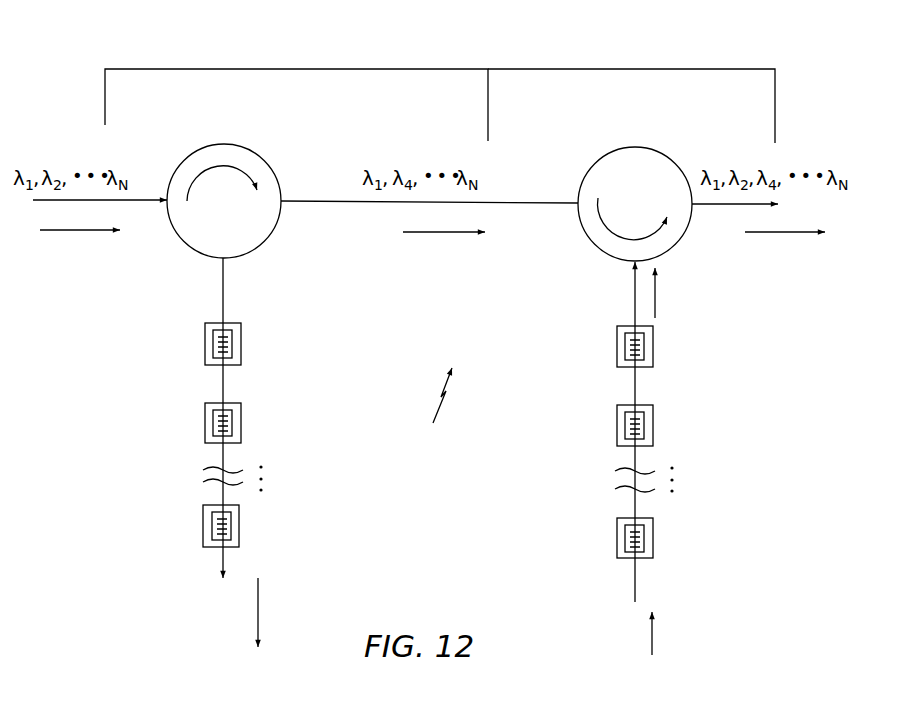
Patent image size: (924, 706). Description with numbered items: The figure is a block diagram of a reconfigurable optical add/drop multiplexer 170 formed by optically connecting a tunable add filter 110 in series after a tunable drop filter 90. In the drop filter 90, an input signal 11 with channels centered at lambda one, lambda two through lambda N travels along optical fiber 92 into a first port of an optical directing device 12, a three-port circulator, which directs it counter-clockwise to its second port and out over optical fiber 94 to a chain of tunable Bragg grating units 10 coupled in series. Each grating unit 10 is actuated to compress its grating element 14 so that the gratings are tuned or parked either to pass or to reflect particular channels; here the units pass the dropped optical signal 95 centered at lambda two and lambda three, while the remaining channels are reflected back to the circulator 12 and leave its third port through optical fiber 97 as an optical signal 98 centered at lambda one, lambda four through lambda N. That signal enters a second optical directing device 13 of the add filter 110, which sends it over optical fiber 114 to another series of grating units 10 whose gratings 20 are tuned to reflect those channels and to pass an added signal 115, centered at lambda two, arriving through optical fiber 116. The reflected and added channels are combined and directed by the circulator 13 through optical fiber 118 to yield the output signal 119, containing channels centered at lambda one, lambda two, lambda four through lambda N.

The tunable Bragg grating unit 10 is at (417, 453).
The optical input signal 11 is at (78, 232).
The optical directing device 12 is at (224, 144).
The optical directing device 13 is at (634, 147).
The grating element 14 is at (232, 340).
The grating 20 is at (213, 335).
The tunable drop filter 90 is at (436, 67).
The optical fiber 92 is at (140, 198).
The optical fiber 94 is at (222, 289).
The optical signal 95 is at (259, 603).
The optical fiber 97 is at (306, 201).
The optical signal 98 is at (441, 234).
The tunable add filter 110 is at (690, 67).
The optical fiber 114 is at (633, 304).
The optical added signal 115 is at (653, 640).
The optical fiber 116 is at (636, 588).
The optical fiber 118 is at (706, 208).
The output signal 119 is at (782, 234).
The reconfigurable optical add/drop multiplexer 170 is at (430, 411).